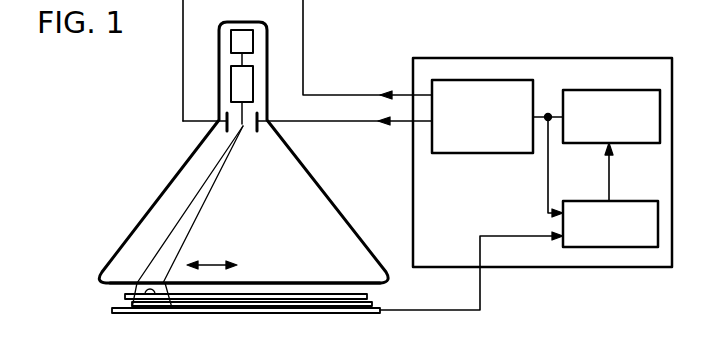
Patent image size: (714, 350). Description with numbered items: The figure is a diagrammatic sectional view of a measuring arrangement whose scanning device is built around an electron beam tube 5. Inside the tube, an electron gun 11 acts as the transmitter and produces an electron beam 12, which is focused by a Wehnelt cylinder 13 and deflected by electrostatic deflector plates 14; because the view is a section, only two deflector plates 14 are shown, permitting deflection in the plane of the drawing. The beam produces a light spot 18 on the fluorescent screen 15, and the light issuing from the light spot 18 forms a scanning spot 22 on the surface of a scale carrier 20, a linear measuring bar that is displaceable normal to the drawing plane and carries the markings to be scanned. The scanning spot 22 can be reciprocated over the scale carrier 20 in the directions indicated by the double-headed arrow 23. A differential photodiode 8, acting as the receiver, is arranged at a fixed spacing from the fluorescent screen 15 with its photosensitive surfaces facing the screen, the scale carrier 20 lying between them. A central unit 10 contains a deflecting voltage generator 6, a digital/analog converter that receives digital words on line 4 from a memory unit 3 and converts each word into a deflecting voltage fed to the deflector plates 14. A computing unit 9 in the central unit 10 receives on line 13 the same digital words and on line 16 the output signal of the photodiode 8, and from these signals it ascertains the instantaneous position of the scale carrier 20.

The memory unit 3 is at (607, 90).
The line 4 is at (548, 114).
The electron beam tube 5 is at (352, 221).
The deflecting voltage generator 6 is at (515, 155).
The differential photodiode 8 is at (268, 312).
The computing unit 9 is at (655, 201).
The central unit 10 is at (491, 61).
The electron gun 11 is at (231, 41).
The electron beam 12 is at (188, 210).
The Wehnelt cylinder 13 is at (231, 87).
The electrostatic deflector plates 14 is at (257, 132).
The fluorescent screen 15 is at (297, 284).
The line 16 is at (482, 307).
The light spot 18 is at (161, 283).
The scale carrier 20 is at (331, 298).
The scanning spot 22 is at (157, 292).
The double-headed arrow 23 is at (217, 244).